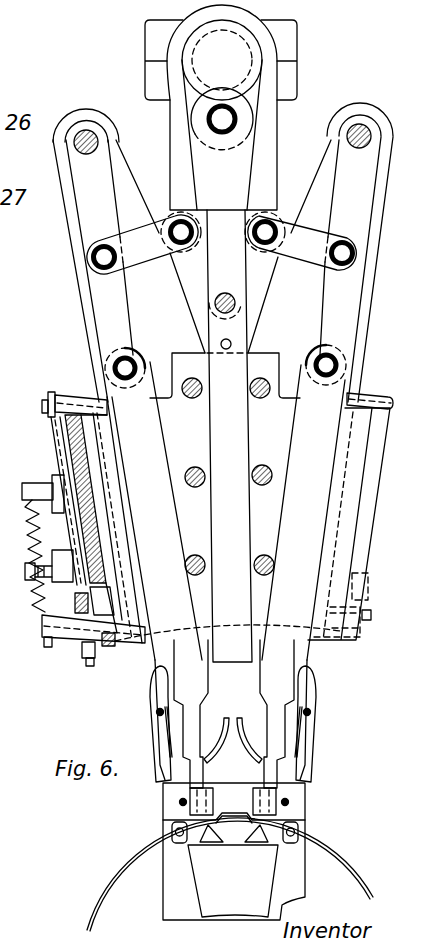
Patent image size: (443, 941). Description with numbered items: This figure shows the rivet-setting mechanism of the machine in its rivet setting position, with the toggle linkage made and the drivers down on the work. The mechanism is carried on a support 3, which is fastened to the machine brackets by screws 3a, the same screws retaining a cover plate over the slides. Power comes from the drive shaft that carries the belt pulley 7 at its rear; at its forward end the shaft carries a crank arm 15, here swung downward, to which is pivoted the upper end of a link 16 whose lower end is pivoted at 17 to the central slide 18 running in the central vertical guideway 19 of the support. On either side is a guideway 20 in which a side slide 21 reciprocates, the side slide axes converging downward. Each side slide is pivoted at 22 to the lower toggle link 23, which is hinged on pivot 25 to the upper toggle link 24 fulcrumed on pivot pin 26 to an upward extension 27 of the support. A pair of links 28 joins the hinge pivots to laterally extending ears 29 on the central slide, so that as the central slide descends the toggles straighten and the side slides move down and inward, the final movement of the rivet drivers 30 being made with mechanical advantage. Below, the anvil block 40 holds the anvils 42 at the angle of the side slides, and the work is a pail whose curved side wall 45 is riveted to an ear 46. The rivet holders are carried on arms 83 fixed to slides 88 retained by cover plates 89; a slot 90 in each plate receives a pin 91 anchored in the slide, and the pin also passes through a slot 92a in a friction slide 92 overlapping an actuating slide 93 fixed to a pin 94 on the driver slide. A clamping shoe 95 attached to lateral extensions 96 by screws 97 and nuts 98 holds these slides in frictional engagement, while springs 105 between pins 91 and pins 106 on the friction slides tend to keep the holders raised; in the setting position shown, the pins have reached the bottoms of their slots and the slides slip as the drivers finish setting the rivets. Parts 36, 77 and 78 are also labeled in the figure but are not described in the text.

The support 3 is at (198, 335).
The screws 3a is at (192, 378).
The belt pulley 7 is at (8, 484).
The crank arm 15 is at (245, 83).
The link 16 is at (233, 167).
The pivot 17 is at (225, 292).
The central slide 18 is at (227, 385).
The central vertical guideway 19 is at (250, 490).
The guideway 20 is at (135, 485).
The side slides 21 is at (157, 390).
The pivot 22 is at (110, 371).
The toggle link 23 is at (103, 321).
The toggle link 24 is at (85, 198).
The pivot 25 is at (96, 258).
The pivot pin 26 is at (87, 130).
The upward extension 27 is at (127, 167).
The links 28 is at (153, 264).
The ears 29 is at (176, 213).
The rivet drivers 30 is at (190, 705).
The guide 36 is at (172, 832).
The anvil block 40 is at (190, 873).
The anvils 42 is at (242, 846).
The side wall 45 is at (119, 862).
The ear 46 is at (235, 818).
The finger 77 is at (231, 715).
The jaw tip 78 is at (215, 790).
The arms 83 is at (163, 762).
The slides 88 is at (150, 680).
The cover plates 89 is at (72, 445).
The slot 90 is at (105, 600).
The pin 91 is at (82, 648).
The friction slide 92 is at (108, 646).
The slot 92a is at (89, 666).
The actuating slide 93 is at (58, 457).
The pin 94 is at (62, 395).
The clamping shoe 95 is at (47, 647).
The lateral extensions 96 is at (73, 560).
The screws 97 is at (27, 572).
The nuts 98 is at (40, 622).
The springs 105 is at (32, 562).
The pins 106 is at (37, 490).